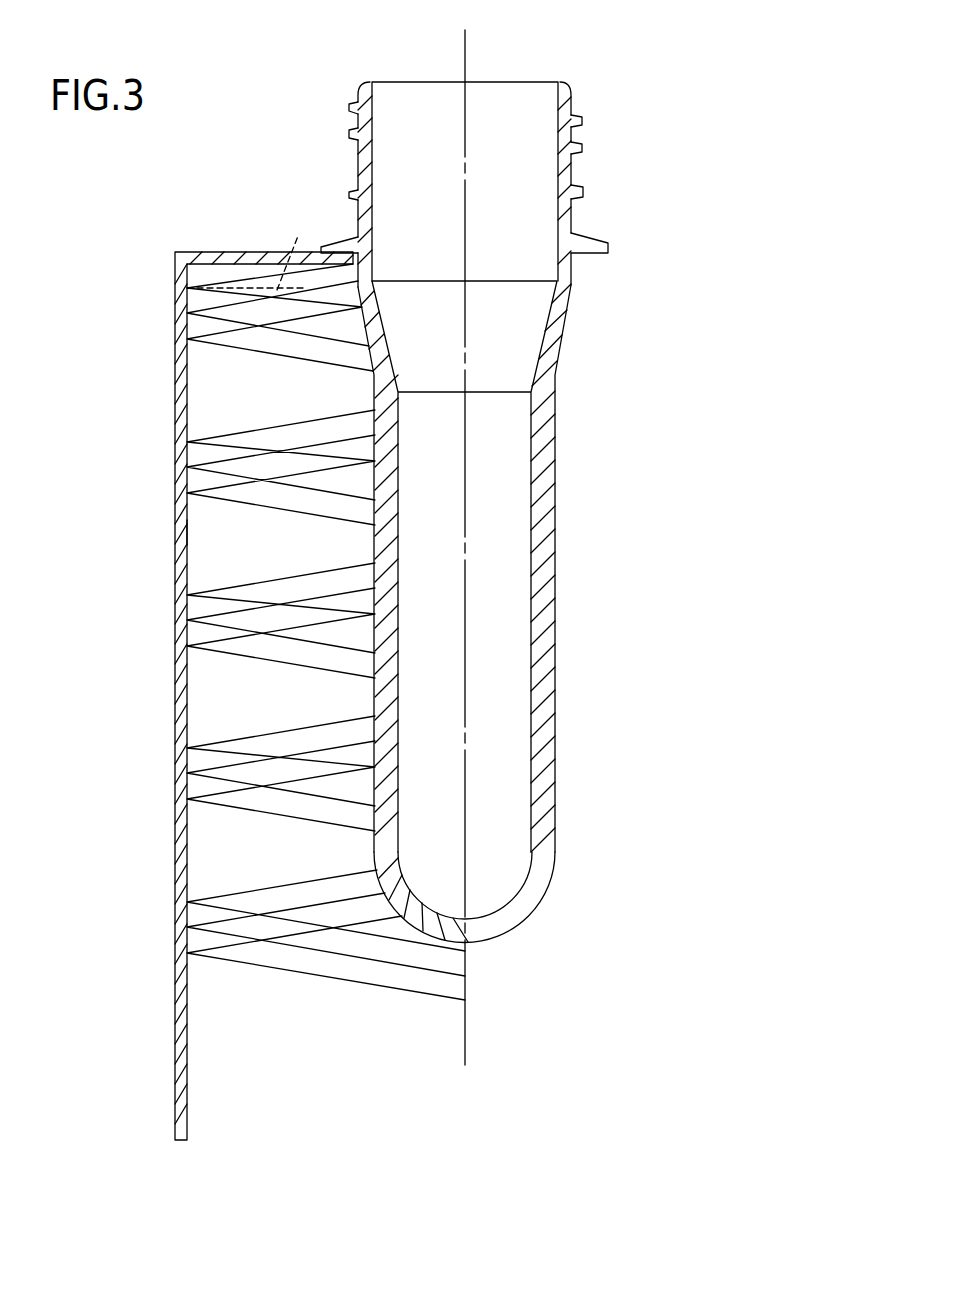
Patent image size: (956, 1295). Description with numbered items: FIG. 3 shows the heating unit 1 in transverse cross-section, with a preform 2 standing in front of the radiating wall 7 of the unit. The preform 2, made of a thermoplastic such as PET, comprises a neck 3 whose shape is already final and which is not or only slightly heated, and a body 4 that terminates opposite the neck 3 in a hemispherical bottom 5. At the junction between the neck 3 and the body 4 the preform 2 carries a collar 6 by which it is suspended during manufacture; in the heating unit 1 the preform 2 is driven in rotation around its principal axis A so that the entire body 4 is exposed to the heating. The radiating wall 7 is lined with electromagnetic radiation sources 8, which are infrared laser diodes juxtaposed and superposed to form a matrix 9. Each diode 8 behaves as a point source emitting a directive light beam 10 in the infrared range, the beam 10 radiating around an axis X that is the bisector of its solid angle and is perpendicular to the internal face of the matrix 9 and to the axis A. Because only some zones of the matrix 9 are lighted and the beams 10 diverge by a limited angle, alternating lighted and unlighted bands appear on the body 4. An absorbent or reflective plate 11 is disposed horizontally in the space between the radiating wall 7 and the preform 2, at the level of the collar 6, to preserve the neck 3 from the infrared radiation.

The heating unit 1 is at (135, 270).
The preform 2 is at (575, 80).
The neck 3 is at (563, 133).
The body 4 is at (542, 573).
The hemispherical bottom 5 is at (515, 913).
The collar 6 is at (590, 243).
The radiating wall 7 is at (177, 385).
The electromagnetic radiation sources 8 is at (187, 387).
The matrix 9 is at (190, 532).
The laser beam 10 is at (296, 347).
The absorbent plate 11 is at (240, 252).
The principal axis A is at (466, 62).
The axis of the beam X is at (252, 253).